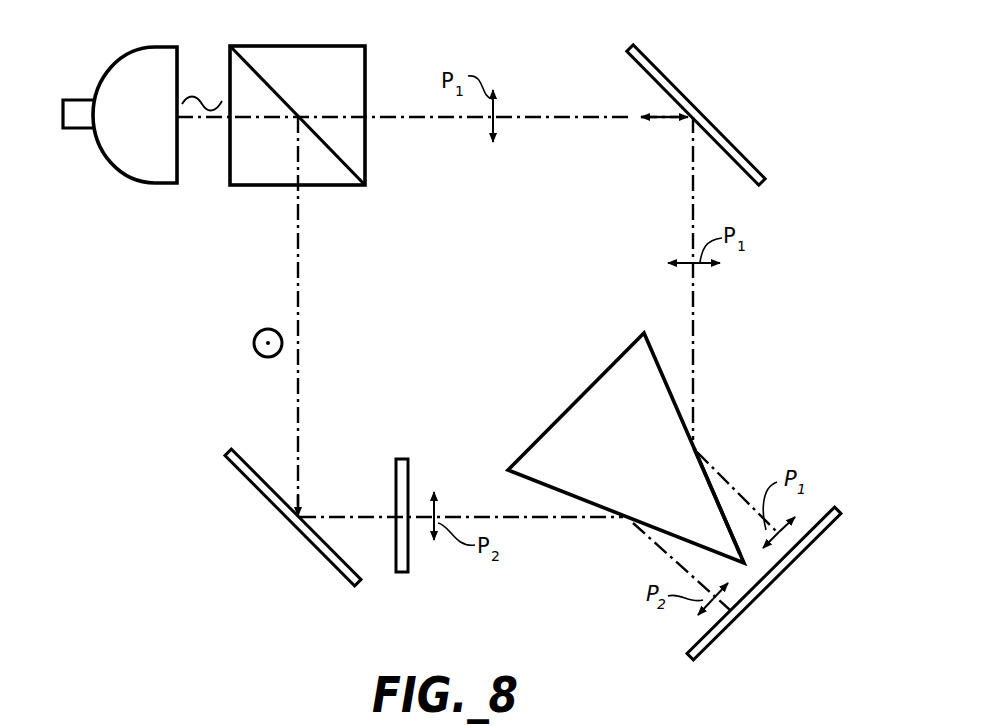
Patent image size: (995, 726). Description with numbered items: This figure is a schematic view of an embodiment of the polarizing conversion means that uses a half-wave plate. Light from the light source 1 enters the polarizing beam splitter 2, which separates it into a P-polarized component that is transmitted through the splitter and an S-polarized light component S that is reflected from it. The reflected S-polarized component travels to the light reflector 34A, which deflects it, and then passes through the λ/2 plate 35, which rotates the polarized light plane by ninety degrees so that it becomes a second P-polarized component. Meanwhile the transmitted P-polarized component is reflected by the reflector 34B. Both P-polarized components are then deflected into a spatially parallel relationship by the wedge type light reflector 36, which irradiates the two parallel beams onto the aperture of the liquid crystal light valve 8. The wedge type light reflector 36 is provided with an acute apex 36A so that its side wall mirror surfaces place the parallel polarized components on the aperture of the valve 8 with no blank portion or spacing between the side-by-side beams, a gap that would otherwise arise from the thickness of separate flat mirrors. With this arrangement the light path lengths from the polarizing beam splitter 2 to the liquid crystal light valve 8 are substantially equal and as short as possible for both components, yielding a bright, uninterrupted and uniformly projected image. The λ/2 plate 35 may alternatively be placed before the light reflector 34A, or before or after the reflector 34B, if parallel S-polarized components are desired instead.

The light source 1 is at (122, 172).
The polarizing beam splitter 2 is at (227, 165).
The S-polarized light component S is at (258, 330).
The light reflector 34A is at (323, 550).
The reflector 34B is at (690, 96).
The λ/2 plate 35 is at (402, 572).
The wedge type light reflector 36 is at (673, 423).
The acute apex 36A is at (718, 517).
The liquid crystal light valve 8 is at (830, 508).